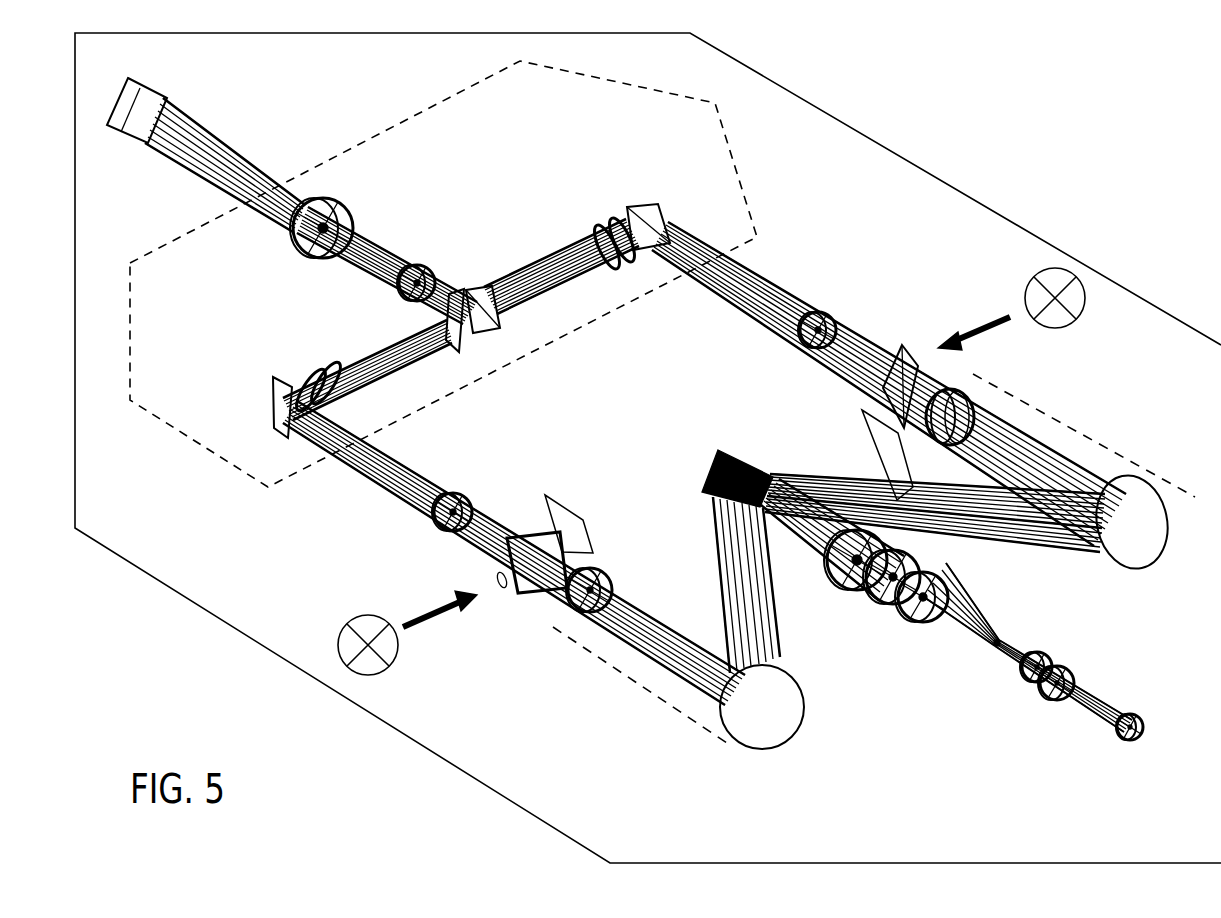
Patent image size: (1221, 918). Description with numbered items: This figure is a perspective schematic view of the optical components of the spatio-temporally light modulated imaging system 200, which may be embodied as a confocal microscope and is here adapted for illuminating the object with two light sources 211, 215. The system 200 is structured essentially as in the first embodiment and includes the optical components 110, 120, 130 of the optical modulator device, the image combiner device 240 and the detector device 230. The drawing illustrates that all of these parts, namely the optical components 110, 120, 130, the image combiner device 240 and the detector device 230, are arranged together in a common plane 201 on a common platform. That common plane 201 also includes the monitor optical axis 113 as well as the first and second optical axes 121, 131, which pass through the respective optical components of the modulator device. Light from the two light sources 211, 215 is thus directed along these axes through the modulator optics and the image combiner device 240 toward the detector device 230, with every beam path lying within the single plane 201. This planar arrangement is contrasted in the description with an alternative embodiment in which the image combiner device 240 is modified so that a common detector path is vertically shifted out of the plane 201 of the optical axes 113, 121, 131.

The spatio-temporally light modulated imaging system 200 is at (1104, 182).
The common plane 201 is at (484, 768).
The detector device 230 is at (152, 183).
The image combiner device 240 is at (612, 355).
The first optical axis 121 is at (730, 284).
The light source 211 is at (1060, 321).
The optical component 120 is at (1124, 436).
The optical component 110 is at (745, 457).
The second optical axis 131 is at (688, 628).
The optical component 130 is at (634, 709).
The monitor optical axis 113 is at (957, 630).
The light source 215 is at (380, 662).